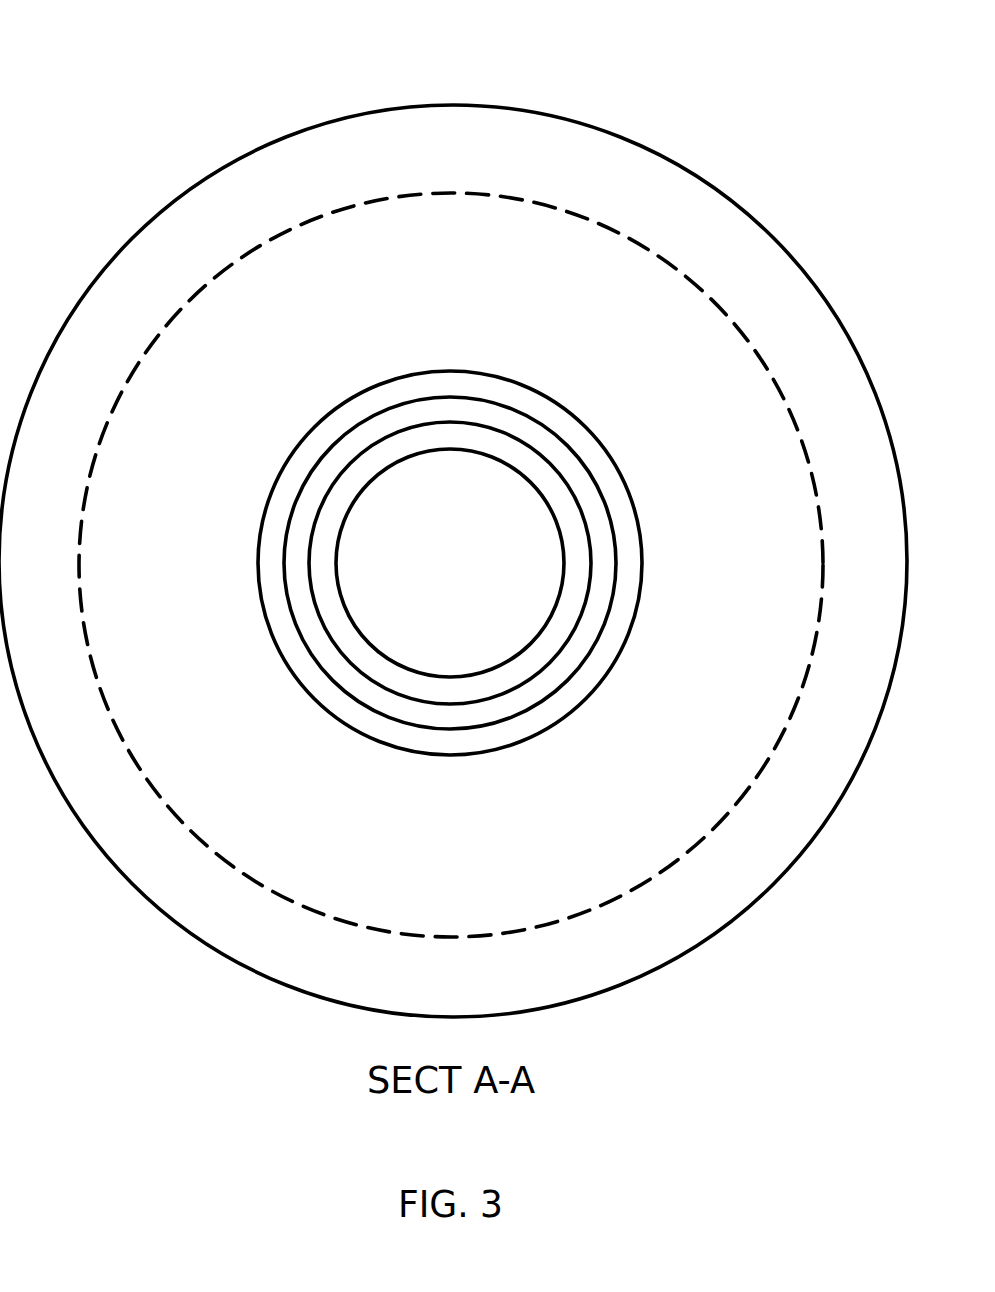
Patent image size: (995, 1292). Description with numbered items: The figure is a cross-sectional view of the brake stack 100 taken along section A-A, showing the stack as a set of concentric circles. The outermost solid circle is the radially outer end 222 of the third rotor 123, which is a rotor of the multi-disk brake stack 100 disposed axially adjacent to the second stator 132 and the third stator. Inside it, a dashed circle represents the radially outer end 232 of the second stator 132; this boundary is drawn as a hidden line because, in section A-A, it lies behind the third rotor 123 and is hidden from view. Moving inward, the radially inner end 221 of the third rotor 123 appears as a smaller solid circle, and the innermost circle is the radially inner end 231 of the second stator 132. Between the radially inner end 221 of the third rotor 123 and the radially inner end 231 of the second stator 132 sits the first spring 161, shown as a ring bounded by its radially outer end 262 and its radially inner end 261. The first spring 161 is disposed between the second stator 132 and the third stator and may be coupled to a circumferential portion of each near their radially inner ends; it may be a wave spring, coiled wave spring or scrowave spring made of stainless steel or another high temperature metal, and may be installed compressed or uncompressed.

The brake stack 100 is at (172, 52).
The third rotor 123 is at (290, 183).
The radially outer end 222 is at (157, 210).
The radially outer end 232 is at (495, 195).
The second stator 132 is at (413, 388).
The radially inner end 221 is at (325, 415).
The radially outer end 262 is at (317, 468).
The radially inner end 261 is at (318, 520).
The radially inner end 231 is at (443, 450).
The first spring 161 is at (592, 500).